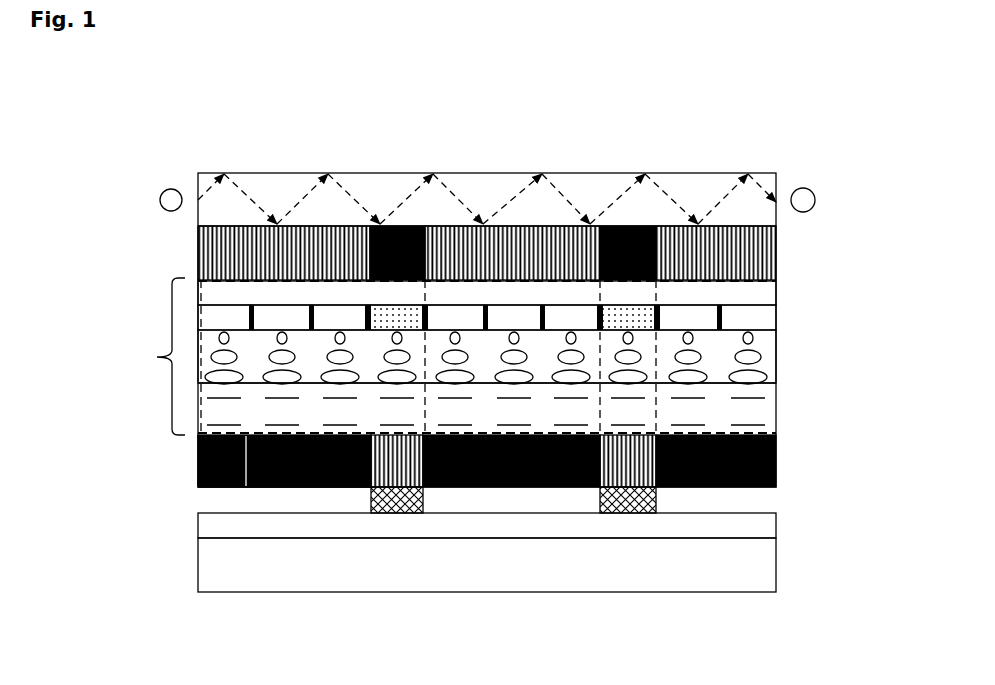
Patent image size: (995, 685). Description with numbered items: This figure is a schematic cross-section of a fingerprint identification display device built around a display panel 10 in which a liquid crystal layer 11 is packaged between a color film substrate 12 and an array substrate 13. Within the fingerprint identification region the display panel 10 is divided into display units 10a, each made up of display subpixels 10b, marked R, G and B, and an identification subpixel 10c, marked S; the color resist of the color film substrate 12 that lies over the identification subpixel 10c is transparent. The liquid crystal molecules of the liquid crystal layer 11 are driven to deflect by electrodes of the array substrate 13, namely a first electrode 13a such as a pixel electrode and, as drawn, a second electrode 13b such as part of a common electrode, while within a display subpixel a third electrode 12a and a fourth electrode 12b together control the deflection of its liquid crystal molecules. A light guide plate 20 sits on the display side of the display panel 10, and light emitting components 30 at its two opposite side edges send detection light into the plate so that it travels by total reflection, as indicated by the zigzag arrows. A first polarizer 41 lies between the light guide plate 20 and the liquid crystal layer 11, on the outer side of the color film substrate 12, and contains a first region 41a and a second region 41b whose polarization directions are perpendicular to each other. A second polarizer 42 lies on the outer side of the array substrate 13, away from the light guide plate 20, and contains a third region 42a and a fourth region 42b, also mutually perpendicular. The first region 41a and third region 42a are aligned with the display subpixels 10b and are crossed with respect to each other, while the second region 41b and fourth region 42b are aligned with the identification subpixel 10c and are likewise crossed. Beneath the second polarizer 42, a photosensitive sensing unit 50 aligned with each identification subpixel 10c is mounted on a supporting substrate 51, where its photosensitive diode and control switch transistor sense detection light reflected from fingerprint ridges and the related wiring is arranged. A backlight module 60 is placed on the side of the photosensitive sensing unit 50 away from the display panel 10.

The display panel 10 is at (491, 346).
The display unit 10a is at (237, 295).
The display subpixels 10b is at (572, 292).
The identification subpixel 10c is at (645, 365).
The liquid crystal layer 11 is at (530, 355).
The color film substrate 12 is at (495, 276).
The third electrode 12a is at (199, 457).
The fourth electrode 12b is at (206, 489).
The array substrate 13 is at (530, 408).
The first electrode 13a is at (640, 397).
The lower layer of second substrate 13b is at (640, 427).
The light guide plate 20 is at (473, 190).
The light emitting components 30 is at (165, 190).
The first polarizer 41 is at (530, 195).
The first region 41a is at (288, 250).
The second region 41b is at (396, 228).
The second polarizer 42 is at (530, 546).
The third region 42a is at (257, 487).
The fourth region 42b is at (406, 458).
The photosensitive sensing unit 50 is at (390, 513).
The supporting substrate 51 is at (776, 528).
The backlight module 60 is at (776, 565).